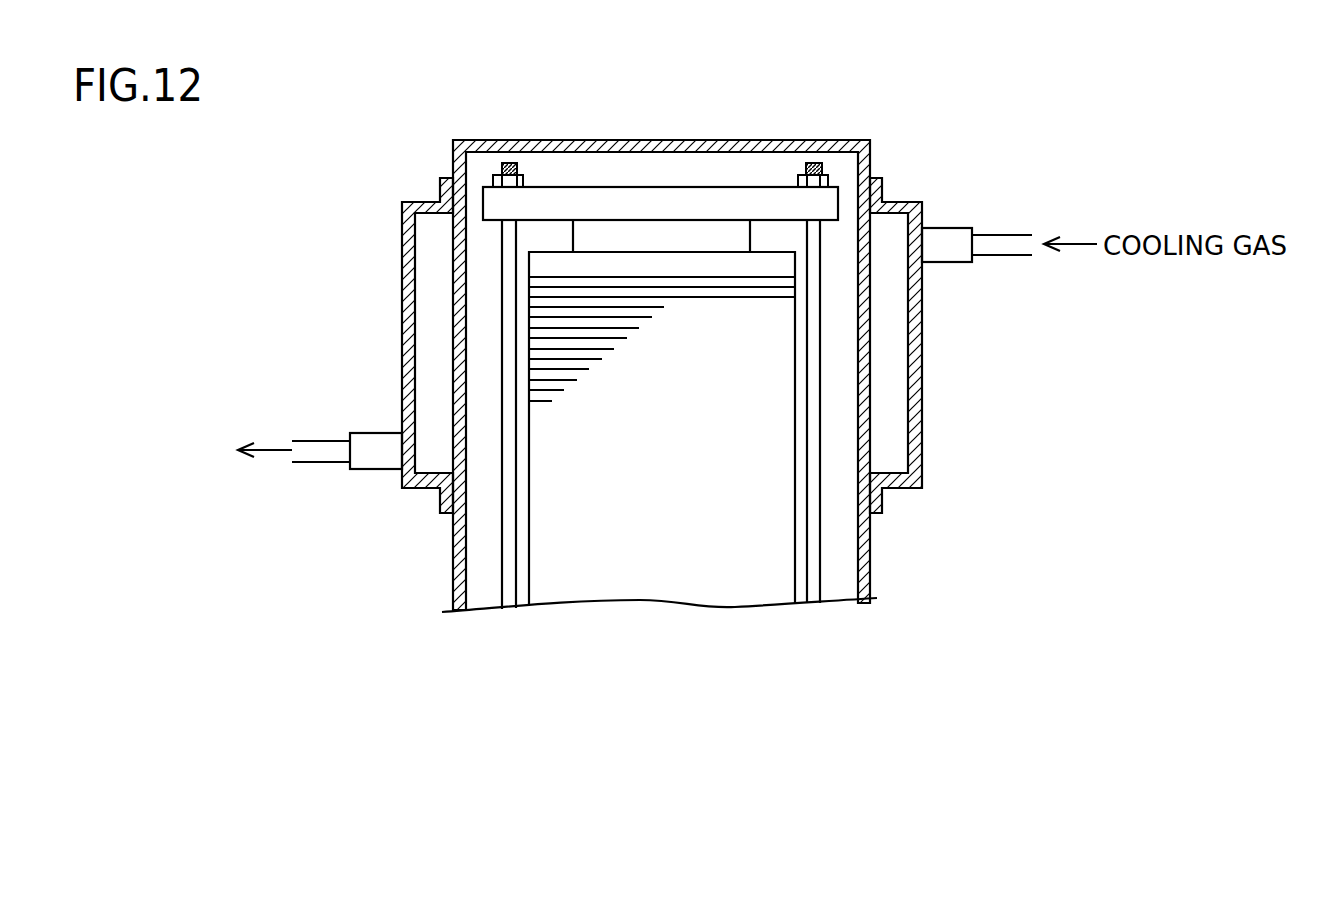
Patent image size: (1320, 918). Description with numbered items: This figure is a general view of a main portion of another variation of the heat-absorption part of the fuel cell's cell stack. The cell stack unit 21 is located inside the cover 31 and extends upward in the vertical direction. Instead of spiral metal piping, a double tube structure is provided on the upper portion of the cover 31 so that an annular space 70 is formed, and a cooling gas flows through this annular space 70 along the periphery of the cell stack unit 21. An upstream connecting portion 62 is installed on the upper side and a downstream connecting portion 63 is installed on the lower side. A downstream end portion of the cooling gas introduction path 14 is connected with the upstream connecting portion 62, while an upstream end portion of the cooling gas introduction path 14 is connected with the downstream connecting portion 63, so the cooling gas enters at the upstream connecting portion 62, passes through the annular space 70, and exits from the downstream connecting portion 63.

The cover 31 is at (634, 140).
The annular space 70 is at (885, 368).
The cell stack unit 21 is at (652, 550).
The upstream connecting portion 62 is at (940, 239).
The downstream connecting portion 63 is at (370, 456).
The cooling gas introduction path 14 is at (1004, 244).